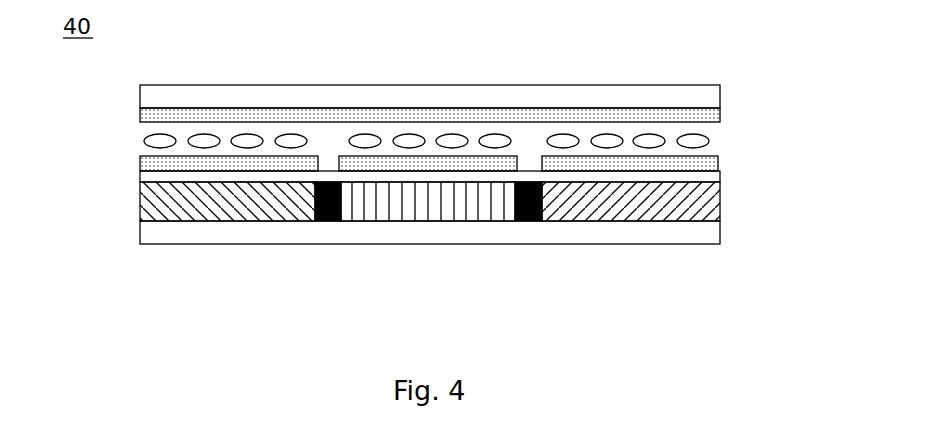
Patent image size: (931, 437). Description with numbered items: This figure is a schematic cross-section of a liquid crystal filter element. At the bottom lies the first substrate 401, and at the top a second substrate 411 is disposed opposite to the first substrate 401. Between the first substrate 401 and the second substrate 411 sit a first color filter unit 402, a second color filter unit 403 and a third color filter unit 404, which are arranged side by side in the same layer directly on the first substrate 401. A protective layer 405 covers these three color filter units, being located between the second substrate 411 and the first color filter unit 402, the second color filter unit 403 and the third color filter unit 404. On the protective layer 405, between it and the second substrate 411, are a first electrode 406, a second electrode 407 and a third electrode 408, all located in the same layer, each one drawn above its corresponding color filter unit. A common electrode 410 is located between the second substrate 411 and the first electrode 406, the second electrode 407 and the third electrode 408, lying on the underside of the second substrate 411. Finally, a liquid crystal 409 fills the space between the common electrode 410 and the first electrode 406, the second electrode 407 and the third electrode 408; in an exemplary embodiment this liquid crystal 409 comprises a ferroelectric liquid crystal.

The first substrate 401 is at (720, 231).
The first color filter unit 402 is at (163, 206).
The second color filter unit 403 is at (361, 206).
The third color filter unit 404 is at (561, 206).
The protective layer 405 is at (140, 180).
The first electrode 406 is at (270, 171).
The second electrode 407 is at (473, 171).
The third electrode 408 is at (670, 171).
The liquid crystal 409 is at (140, 141).
The common electrode 410 is at (720, 116).
The second substrate 411 is at (140, 97).